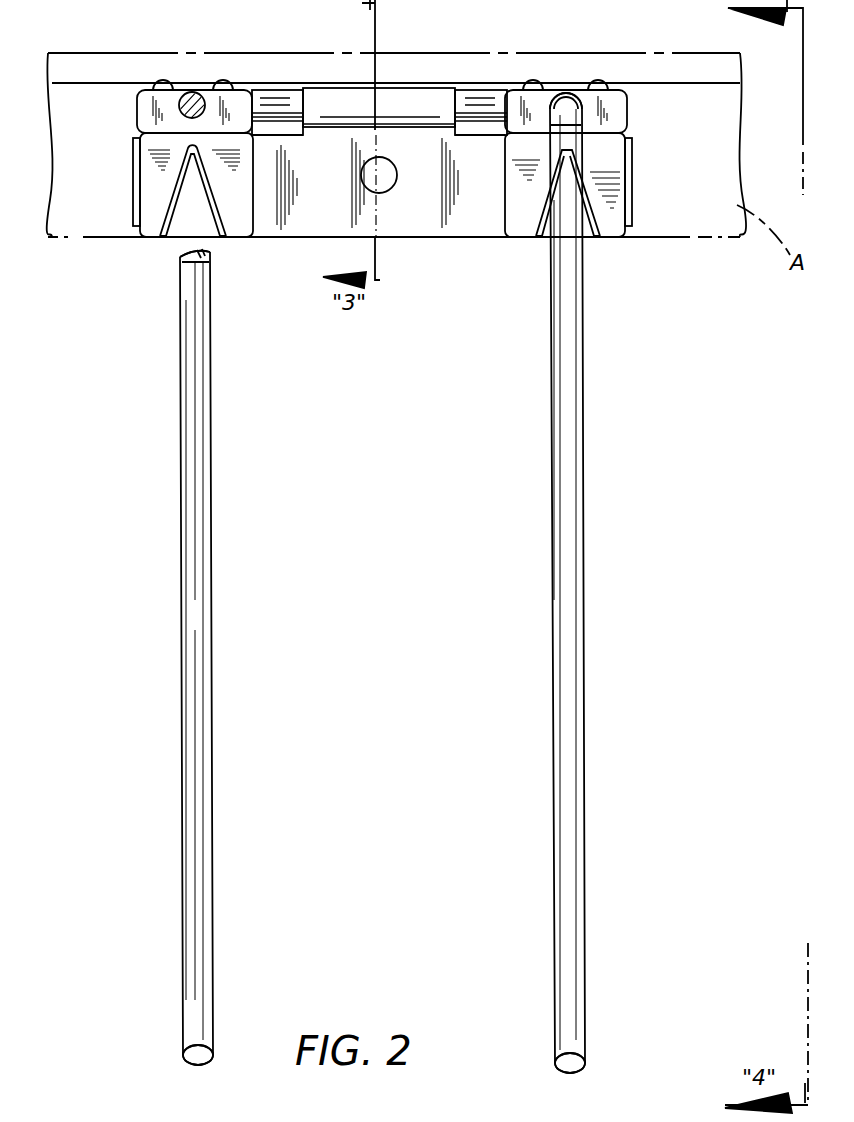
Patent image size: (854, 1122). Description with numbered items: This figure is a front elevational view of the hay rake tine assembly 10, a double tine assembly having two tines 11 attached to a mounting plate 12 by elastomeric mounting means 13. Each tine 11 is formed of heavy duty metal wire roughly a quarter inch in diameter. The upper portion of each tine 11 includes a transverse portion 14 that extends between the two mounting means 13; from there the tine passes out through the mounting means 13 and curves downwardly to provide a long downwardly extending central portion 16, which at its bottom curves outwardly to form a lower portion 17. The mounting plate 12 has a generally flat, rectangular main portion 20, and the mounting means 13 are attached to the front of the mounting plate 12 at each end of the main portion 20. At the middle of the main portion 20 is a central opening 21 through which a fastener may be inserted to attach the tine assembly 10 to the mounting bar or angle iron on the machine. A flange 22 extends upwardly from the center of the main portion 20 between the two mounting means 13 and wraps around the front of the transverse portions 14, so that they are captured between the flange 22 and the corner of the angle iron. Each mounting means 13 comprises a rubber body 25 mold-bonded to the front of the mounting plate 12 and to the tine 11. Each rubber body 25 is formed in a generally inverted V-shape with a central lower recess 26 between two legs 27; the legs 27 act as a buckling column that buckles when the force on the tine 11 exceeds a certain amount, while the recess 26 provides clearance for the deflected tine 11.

The tine assembly 10 is at (138, 301).
The tine 11 is at (203, 708).
The mounting plate 12 is at (432, 218).
The elastomeric mounting means 13 is at (152, 170).
The transverse portion 14 is at (275, 100).
The central portion 16 is at (198, 451).
The lower portion 17 is at (207, 976).
The main portion 20 is at (133, 226).
The central opening 21 is at (384, 183).
The flange 22 is at (418, 95).
The rubber body 25 is at (143, 135).
The central lower recess 26 is at (222, 236).
The leg 27 is at (156, 235).